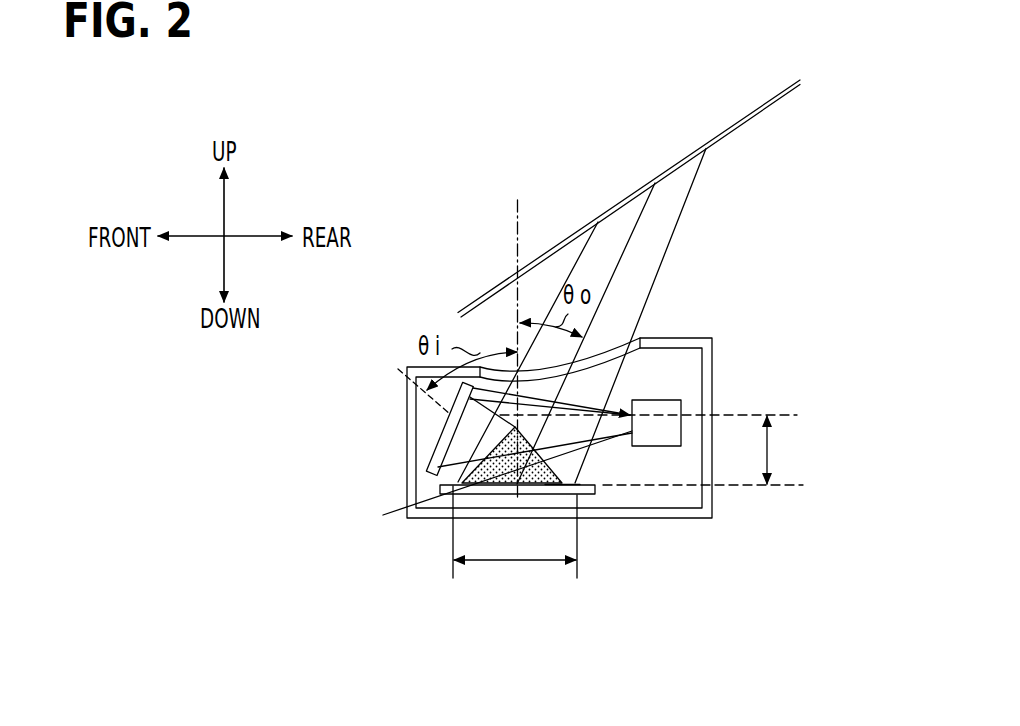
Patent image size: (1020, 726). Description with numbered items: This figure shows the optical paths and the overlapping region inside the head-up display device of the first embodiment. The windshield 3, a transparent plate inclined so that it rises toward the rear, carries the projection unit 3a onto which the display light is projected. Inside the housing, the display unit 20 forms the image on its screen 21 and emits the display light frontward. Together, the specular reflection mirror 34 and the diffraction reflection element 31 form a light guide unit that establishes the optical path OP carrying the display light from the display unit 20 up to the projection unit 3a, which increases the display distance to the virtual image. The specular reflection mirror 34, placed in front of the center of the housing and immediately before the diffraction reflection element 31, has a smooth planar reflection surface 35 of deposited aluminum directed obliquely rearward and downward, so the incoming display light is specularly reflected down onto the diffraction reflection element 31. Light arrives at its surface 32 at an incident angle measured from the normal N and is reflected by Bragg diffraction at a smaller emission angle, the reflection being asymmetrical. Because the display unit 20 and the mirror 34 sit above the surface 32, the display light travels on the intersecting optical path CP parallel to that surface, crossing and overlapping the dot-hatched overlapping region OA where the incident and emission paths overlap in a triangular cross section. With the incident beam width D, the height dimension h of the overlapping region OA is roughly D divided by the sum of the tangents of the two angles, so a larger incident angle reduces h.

The windshield 3 is at (752, 112).
The projection unit 3a is at (682, 173).
The display unit 20 is at (663, 400).
The screen 21 is at (613, 411).
The diffraction reflection element 31 is at (577, 496).
The surface 32 is at (561, 480).
The specular reflection mirror 34 is at (440, 438).
The reflection surface 35 is at (455, 479).
The normal N is at (515, 233).
The optical path OP is at (668, 257).
The overlapping region OA is at (493, 480).
The intersecting optical path CP is at (615, 440).
The beam width D is at (513, 568).
The height dimension h is at (770, 444).